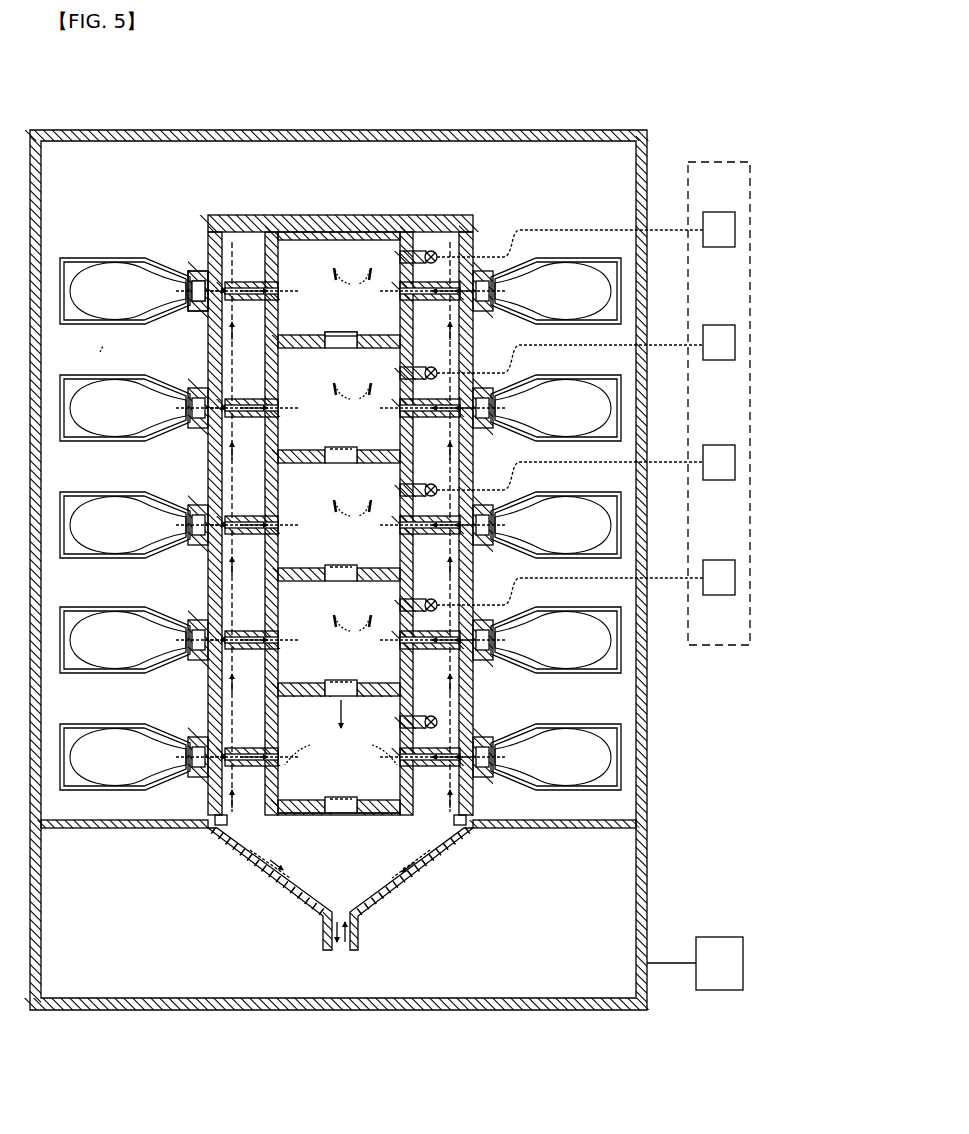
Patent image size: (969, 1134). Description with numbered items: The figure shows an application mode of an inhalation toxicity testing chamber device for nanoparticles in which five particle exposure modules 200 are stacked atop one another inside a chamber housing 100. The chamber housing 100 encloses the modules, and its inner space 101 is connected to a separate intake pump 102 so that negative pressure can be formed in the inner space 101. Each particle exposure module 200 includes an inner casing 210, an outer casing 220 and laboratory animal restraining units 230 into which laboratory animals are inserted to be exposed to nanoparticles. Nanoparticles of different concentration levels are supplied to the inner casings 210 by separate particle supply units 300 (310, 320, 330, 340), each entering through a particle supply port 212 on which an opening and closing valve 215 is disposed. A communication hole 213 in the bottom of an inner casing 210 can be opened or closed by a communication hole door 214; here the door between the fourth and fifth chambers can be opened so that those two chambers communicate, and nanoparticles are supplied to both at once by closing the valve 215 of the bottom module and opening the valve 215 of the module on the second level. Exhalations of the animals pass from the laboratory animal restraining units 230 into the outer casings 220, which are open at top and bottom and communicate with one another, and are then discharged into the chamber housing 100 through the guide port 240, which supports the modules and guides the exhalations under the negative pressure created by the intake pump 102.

The chamber housing 100 is at (398, 1012).
The inner space 101 is at (528, 984).
The intake pump 102 is at (718, 992).
The particle exposure module 200 is at (340, 531).
The inner casing 210 is at (484, 533).
The particle supply port 212 is at (422, 250).
The communication hole 213 is at (337, 350).
The communication hole door 214 is at (335, 331).
The opening and closing valve 215 is at (436, 252).
The outer casing 220 is at (196, 268).
The laboratory animal restraining unit 230 is at (80, 257).
The guide port 240 is at (408, 878).
The particle supply unit 300 is at (739, 368).
The particle supply unit 310 is at (735, 215).
The particle supply unit 320 is at (735, 328).
The particle supply unit 330 is at (735, 448).
The particle supply unit 340 is at (735, 563).